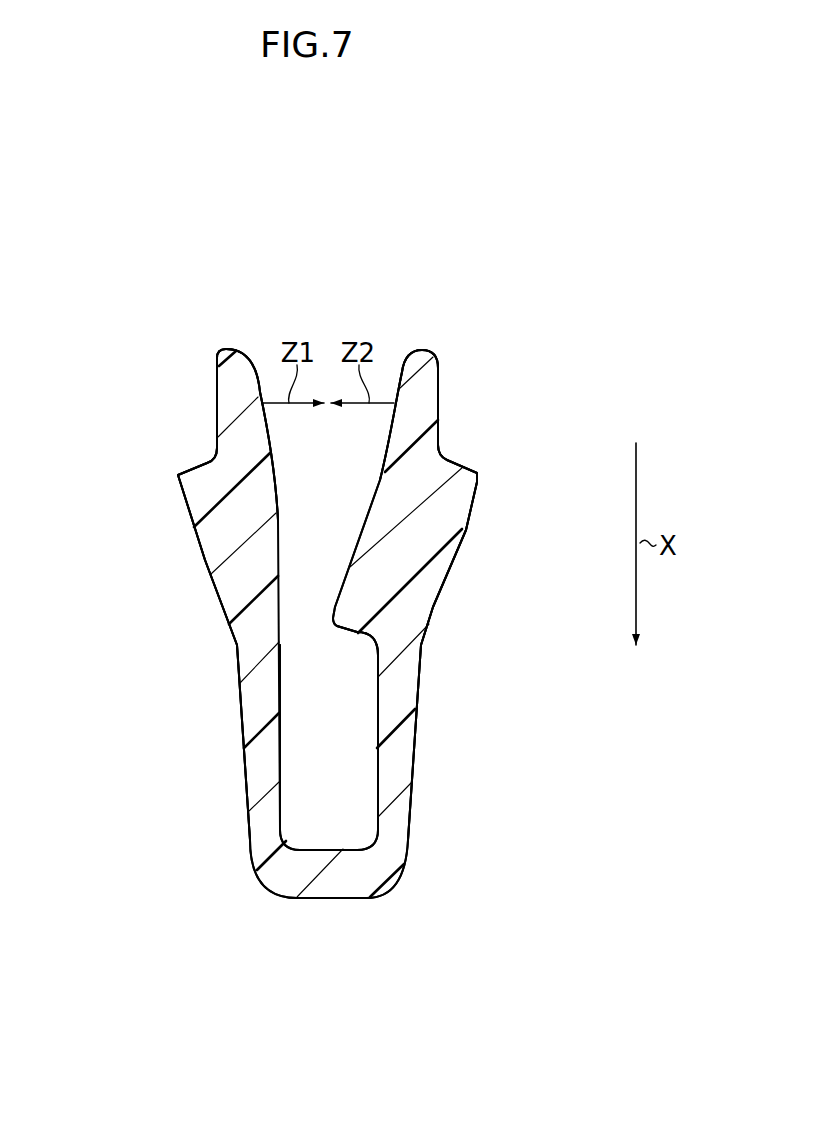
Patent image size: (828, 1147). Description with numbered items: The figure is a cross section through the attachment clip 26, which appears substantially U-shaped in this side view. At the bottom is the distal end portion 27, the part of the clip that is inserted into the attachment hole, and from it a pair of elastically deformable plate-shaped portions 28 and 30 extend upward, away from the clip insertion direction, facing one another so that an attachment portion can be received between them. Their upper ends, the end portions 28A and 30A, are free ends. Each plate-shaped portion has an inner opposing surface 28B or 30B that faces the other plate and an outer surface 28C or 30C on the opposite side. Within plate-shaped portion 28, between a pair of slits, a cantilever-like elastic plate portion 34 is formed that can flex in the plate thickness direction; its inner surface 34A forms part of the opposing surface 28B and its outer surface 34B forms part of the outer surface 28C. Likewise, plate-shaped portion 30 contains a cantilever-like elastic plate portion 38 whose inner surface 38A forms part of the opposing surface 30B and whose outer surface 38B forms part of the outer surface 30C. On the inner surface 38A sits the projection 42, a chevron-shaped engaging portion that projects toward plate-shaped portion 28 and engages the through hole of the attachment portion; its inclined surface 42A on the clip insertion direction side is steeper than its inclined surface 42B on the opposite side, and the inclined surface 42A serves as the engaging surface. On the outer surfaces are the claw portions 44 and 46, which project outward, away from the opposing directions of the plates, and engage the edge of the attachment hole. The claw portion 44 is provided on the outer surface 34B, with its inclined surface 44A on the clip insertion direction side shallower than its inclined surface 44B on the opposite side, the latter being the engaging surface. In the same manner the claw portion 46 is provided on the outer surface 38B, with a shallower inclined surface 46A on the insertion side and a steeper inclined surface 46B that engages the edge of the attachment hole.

The attachment clip 26 is at (459, 313).
The distal end portion 27 is at (321, 900).
The plate-shaped portion 28 is at (240, 692).
The end portion 28A is at (218, 355).
The opposing surface 28B is at (283, 775).
The outer surface 28C is at (243, 738).
The plate-shaped portion 30 is at (415, 738).
The end portion 30A is at (431, 353).
The opposing surface 30B is at (377, 774).
The outer surface 30C is at (420, 690).
The elastic plate portion 34 is at (249, 352).
The inner surface 34A is at (280, 521).
The outer surface 34B is at (216, 410).
The elastic plate portion 38 is at (409, 354).
The inner surface 38A is at (389, 428).
The outer surface 38B is at (440, 410).
The projection 42 is at (347, 634).
The inclined surface 42A is at (362, 652).
The inclined surface 42B is at (352, 550).
The claw portion 44 is at (177, 474).
The inclined surface 44A is at (200, 549).
The inclined surface 44B is at (202, 462).
The claw portion 46 is at (478, 474).
The inclined surface 46A is at (470, 520).
The inclined surface 46B is at (466, 470).